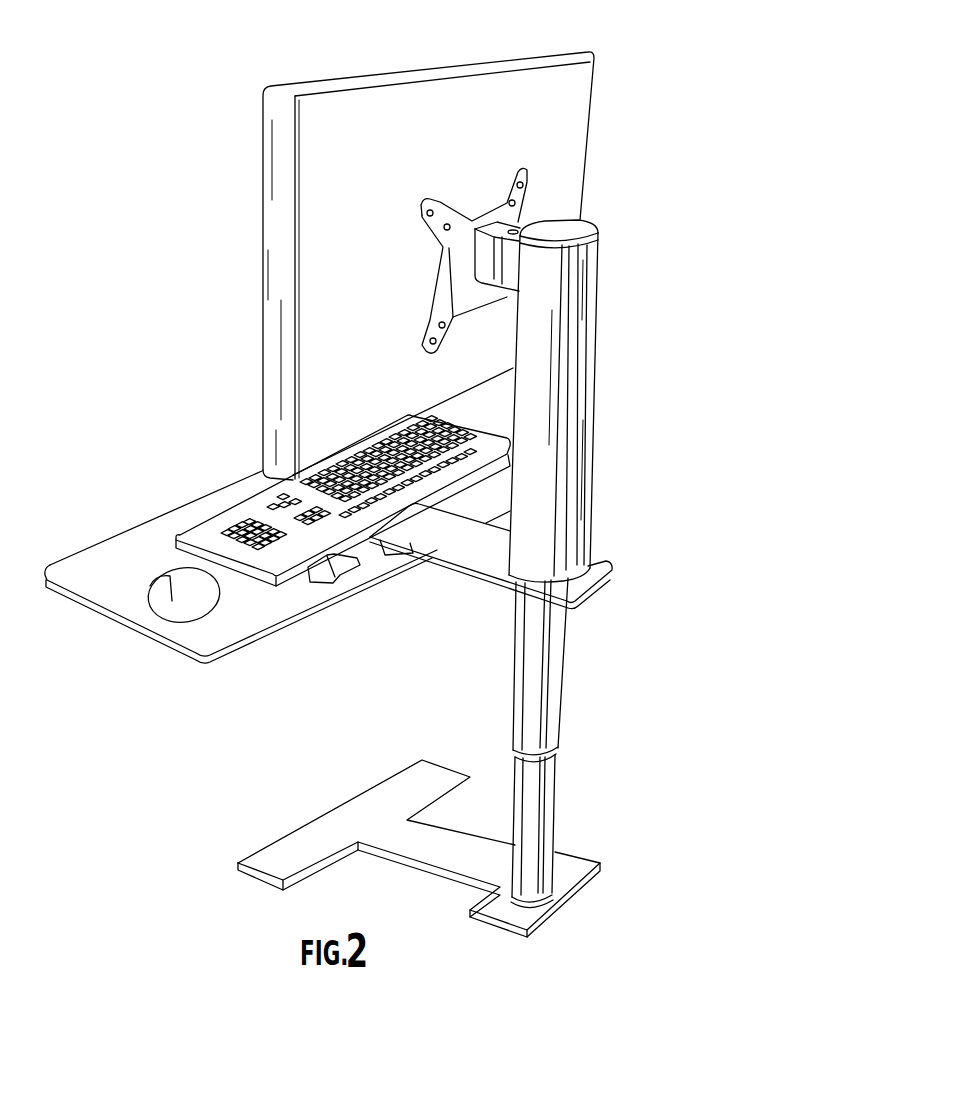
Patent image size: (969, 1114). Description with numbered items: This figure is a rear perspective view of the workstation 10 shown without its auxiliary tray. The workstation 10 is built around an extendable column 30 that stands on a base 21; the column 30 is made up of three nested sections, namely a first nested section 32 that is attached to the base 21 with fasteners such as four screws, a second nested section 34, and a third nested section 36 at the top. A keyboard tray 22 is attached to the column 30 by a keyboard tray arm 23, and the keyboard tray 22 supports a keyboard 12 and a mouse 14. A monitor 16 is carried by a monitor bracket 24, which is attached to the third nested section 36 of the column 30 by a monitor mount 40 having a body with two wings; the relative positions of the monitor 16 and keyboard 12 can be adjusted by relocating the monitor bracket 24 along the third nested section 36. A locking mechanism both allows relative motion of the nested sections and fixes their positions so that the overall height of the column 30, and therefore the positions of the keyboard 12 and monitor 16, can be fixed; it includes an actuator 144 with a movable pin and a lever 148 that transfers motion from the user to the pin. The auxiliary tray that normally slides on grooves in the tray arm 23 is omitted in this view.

The workstation 10 is at (158, 285).
The keyboard 12 is at (202, 527).
The mouse 14 is at (185, 595).
The monitor 16 is at (347, 81).
The base 21 is at (355, 820).
The keyboard tray 22 is at (118, 598).
The keyboard tray arm 23 is at (484, 550).
The monitor bracket 24 is at (450, 257).
The extendable column 30 is at (622, 429).
The first nested section 32 is at (558, 840).
The second nested section 34 is at (570, 678).
The third nested section 36 is at (598, 300).
The monitor mount 40 is at (529, 204).
The actuator 144 is at (402, 556).
The lever 148 is at (340, 585).